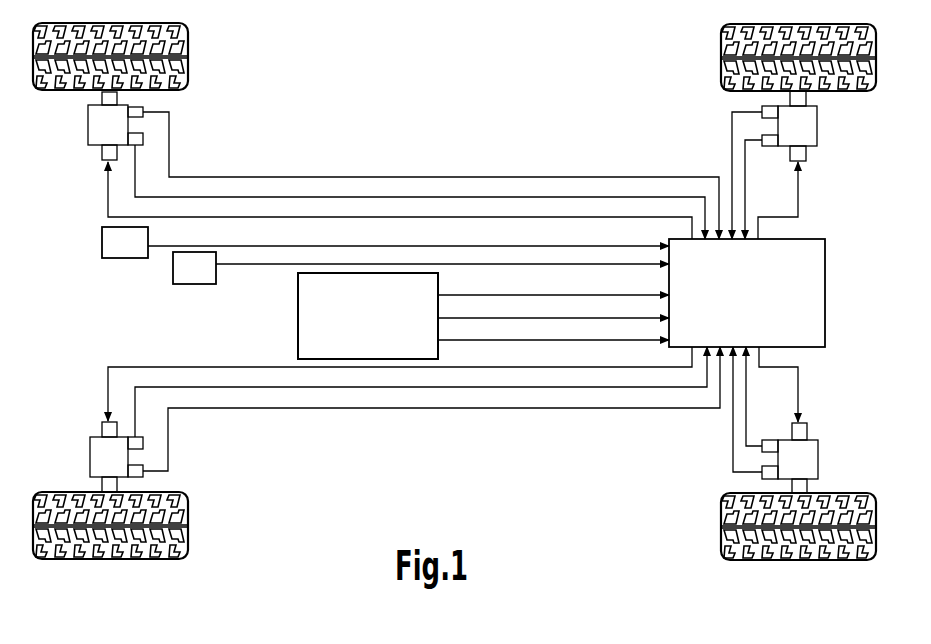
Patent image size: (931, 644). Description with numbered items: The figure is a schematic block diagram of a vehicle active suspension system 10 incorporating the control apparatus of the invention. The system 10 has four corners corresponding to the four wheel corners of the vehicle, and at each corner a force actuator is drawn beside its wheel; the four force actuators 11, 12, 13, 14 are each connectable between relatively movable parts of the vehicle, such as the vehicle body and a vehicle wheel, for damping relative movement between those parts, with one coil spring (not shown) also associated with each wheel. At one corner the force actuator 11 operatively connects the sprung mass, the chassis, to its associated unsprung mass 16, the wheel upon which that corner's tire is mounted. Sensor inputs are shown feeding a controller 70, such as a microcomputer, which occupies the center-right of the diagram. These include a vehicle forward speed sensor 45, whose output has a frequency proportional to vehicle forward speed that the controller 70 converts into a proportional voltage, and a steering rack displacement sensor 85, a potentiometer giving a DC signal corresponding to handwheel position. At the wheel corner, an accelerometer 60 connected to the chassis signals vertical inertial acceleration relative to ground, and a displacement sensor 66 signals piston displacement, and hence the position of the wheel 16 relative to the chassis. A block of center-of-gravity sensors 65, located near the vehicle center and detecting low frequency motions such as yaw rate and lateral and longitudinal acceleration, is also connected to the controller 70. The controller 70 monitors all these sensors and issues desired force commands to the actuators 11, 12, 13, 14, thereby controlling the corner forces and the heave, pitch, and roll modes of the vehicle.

The vehicle active suspension system 10 is at (128, 580).
The force actuator 11 is at (100, 468).
The force actuator 12 is at (99, 136).
The force actuator 13 is at (788, 137).
The force actuator 14 is at (789, 471).
The unsprung mass 16 is at (180, 530).
The vehicle forward speed sensor 45 is at (114, 255).
The accelerometer 60 is at (145, 472).
The center-of-gravity sensors 65 is at (298, 313).
The displacement sensor 66 is at (145, 443).
The controller 70 is at (813, 254).
The steering rack displacement sensor 85 is at (183, 280).